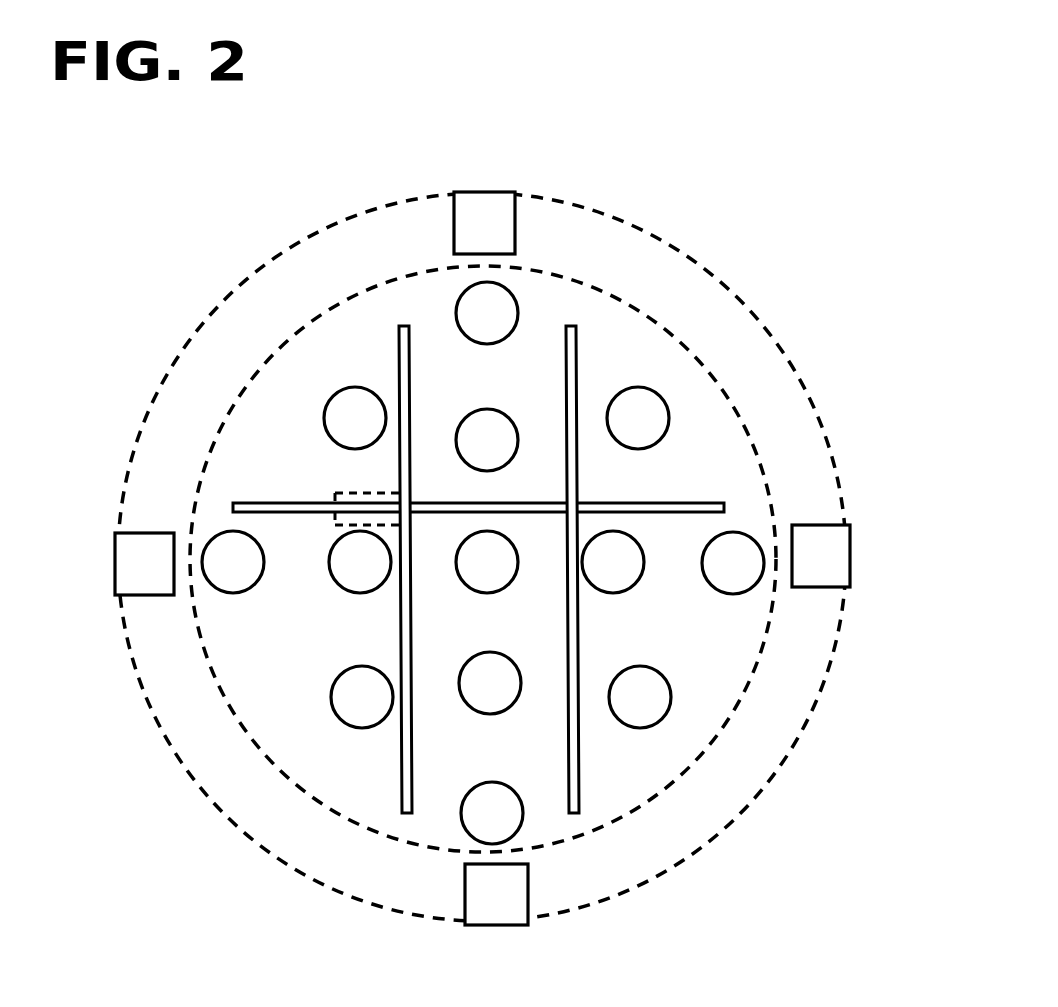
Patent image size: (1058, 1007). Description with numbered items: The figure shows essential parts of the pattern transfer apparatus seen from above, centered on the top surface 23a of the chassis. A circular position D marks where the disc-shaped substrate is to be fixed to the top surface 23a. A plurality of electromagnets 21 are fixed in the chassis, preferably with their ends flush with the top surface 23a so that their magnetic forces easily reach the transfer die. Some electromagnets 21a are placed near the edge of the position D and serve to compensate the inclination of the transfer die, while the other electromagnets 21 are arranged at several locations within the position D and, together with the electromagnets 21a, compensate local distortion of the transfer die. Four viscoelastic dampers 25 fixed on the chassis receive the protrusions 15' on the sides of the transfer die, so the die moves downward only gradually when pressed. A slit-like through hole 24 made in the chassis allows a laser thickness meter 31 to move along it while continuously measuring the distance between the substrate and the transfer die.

The protrusions 15' is at (498, 557).
The position D is at (720, 742).
The top surface 23a is at (184, 269).
The viscoelastic dampers 25 is at (481, 192).
The through hole 24 is at (520, 504).
The laser thickness meter 31 is at (384, 494).
The electromagnets 21 is at (338, 430).
The electromagnets 21a is at (462, 319).